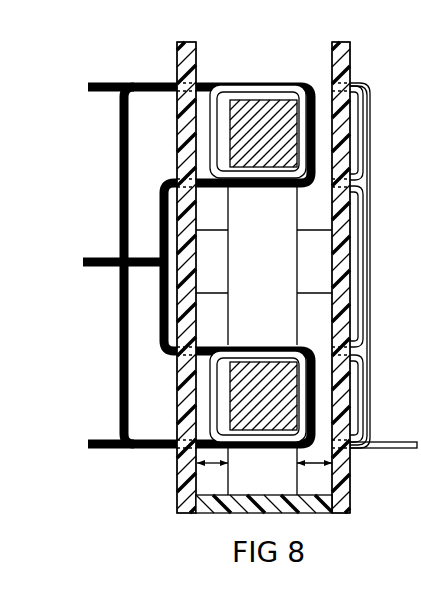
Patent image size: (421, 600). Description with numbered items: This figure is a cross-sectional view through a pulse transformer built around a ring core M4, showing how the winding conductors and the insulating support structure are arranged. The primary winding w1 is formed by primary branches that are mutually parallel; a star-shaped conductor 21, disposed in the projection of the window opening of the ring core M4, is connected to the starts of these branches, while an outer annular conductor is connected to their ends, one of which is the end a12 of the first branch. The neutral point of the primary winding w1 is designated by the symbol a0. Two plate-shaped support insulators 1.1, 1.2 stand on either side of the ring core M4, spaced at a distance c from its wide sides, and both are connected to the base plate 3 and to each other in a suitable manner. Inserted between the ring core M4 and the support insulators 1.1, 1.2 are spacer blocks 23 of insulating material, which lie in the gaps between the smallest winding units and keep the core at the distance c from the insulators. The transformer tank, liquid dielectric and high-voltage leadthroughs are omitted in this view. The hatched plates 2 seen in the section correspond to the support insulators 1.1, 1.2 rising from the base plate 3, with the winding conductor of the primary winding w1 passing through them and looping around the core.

The primary winding w1 is at (70, 70).
The ferromagnetic bar (core leg) 2 is at (185, 84).
The plate-shaped support insulator 1.1 is at (185, 128).
The plate-shaped support insulator 1.2 is at (341, 117).
The ring core M4 is at (263, 108).
The star-shaped conductor 21 is at (147, 228).
The neutral point of the primary winding a0 is at (105, 279).
The spacer block 23 is at (318, 256).
The end of primary branch a12 is at (65, 458).
The distance c is at (213, 464).
The base plate 3 is at (352, 504).